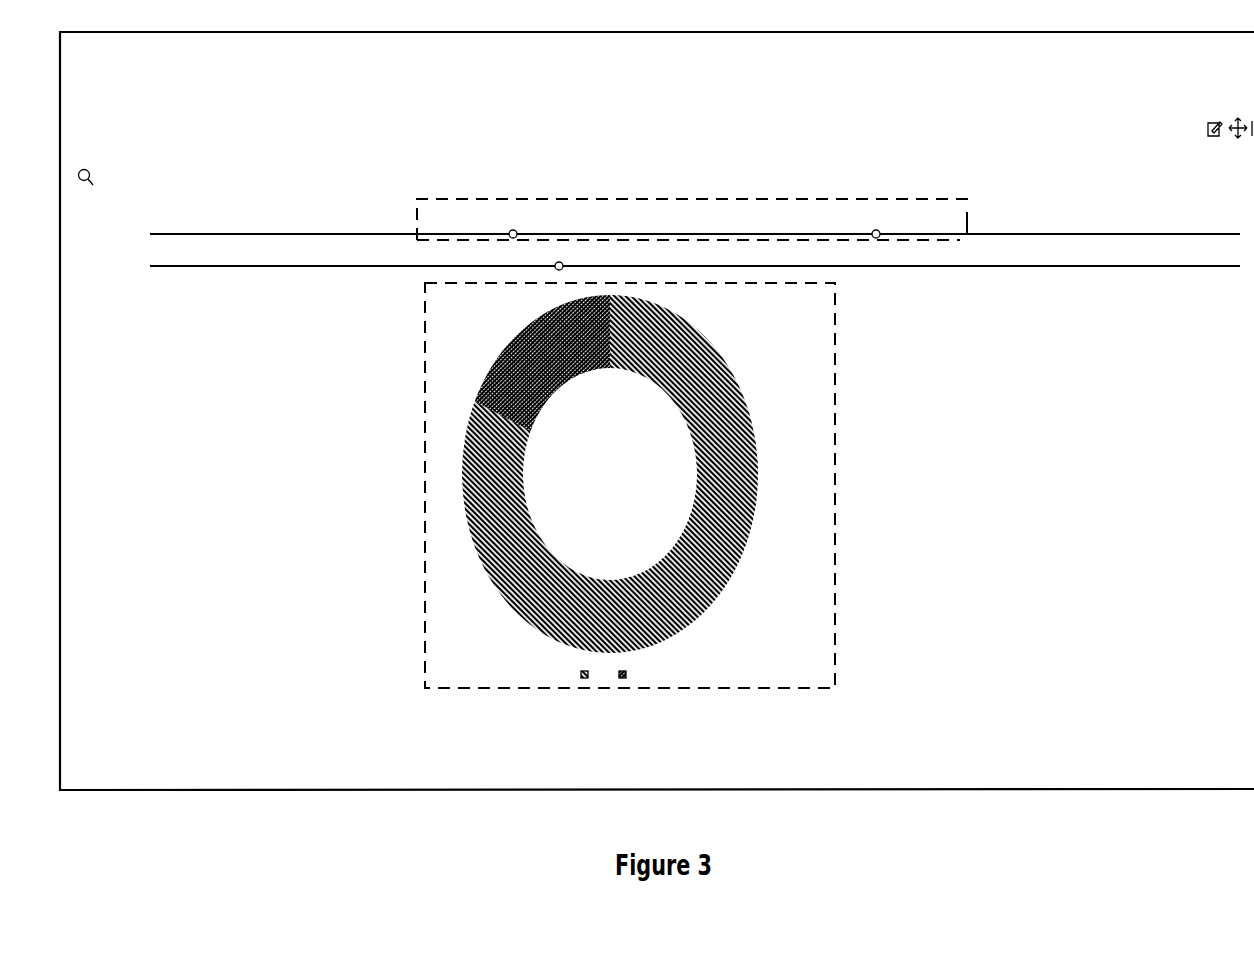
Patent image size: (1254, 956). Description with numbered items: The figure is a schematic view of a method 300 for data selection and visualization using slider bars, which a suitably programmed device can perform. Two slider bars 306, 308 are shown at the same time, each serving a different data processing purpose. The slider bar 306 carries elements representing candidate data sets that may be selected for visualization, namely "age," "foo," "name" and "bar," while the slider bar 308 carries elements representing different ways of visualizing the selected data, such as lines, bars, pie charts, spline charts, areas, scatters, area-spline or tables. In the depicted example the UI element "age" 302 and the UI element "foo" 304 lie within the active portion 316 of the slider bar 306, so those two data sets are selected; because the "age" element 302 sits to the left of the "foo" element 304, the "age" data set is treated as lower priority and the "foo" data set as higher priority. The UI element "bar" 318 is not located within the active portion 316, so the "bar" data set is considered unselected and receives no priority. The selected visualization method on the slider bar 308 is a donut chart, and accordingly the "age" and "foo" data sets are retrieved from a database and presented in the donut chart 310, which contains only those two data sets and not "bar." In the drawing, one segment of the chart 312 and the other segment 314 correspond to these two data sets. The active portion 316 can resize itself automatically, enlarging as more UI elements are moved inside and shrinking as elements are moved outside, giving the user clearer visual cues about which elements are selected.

The method for data selection and visualization using a slider bar 300 is at (664, 80).
The UI element "age" 302 is at (513, 208).
The UI element "foo" 304 is at (879, 207).
The slider bar 306 is at (1040, 240).
The slider bar 308 is at (222, 268).
The donut chart 310 is at (515, 690).
The first donut chart segment (age) 312 is at (504, 351).
The second donut chart segment (foo) 314 is at (758, 497).
The active portion 316 is at (935, 246).
The UI element "bar" 318 is at (1231, 213).